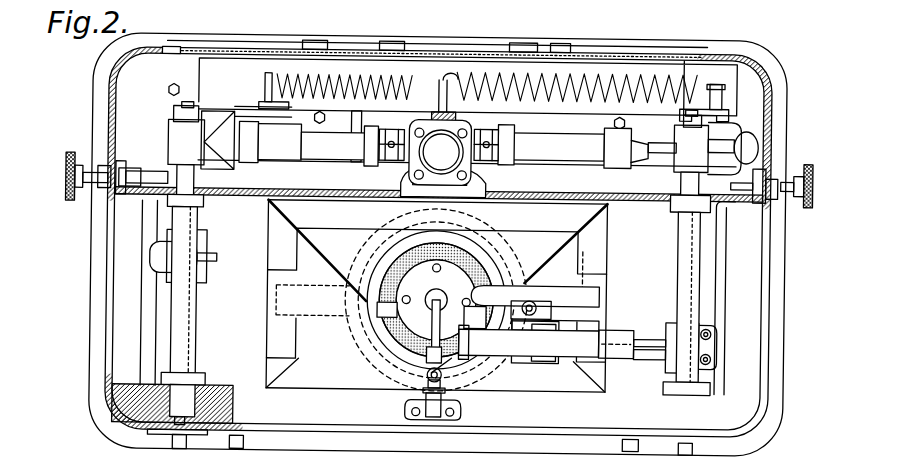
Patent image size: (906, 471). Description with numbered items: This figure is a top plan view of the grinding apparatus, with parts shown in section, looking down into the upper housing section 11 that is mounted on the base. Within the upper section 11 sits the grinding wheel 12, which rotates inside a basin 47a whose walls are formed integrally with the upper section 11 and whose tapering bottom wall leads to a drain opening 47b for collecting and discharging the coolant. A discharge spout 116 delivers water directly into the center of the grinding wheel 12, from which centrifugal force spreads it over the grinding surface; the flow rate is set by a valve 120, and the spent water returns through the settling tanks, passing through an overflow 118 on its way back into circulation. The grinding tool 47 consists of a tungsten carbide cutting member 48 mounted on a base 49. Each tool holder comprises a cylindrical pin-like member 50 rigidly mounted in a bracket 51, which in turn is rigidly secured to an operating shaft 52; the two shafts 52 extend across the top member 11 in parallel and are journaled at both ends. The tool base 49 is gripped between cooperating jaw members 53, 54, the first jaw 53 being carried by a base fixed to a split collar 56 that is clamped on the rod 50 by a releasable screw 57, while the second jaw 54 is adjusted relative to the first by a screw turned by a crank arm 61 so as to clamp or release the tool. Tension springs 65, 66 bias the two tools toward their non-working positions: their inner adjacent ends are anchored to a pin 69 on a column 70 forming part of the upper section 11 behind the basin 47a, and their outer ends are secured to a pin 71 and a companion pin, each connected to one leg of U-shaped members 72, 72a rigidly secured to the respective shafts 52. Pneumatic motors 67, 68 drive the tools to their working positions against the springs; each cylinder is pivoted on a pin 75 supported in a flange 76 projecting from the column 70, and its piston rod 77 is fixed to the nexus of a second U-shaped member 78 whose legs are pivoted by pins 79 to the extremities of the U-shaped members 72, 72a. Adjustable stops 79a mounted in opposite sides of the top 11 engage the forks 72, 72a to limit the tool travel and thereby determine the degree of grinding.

The upper housing section 11 is at (100, 353).
The grinding wheel 12 is at (455, 236).
The grinding tool 47 is at (313, 345).
The basin 47a is at (728, 288).
The drain opening 47b is at (480, 252).
The cutting member 48 is at (487, 285).
The base 49 is at (312, 287).
The cylindrical pin-like member 50 is at (205, 252).
The bracket 51 is at (207, 234).
The operating shaft 52 is at (678, 240).
The jaw member 53 is at (560, 362).
The jaw member 54 is at (560, 295).
The split collar 56 is at (525, 367).
The releasable screw 57 is at (538, 364).
The crank arm 61 is at (602, 309).
The tension spring 65 is at (346, 73).
The tension spring 66 is at (524, 72).
The pneumatic motor 67 is at (343, 164).
The pneumatic motor 68 is at (578, 166).
The pin 69 is at (444, 78).
The column 70 is at (456, 113).
The pin 71 is at (262, 96).
The U-shaped member 72 is at (248, 108).
The U-shaped member 72a is at (727, 116).
The pin 75 is at (388, 163).
The flange 76 is at (378, 147).
The piston rod 77 is at (651, 141).
The second U-shaped member 78 is at (237, 108).
The pin 79 is at (275, 142).
The adjustable stop 79a is at (76, 203).
The discharge spout 116 is at (437, 300).
The overflow 118 is at (721, 96).
The valve 120 is at (428, 375).